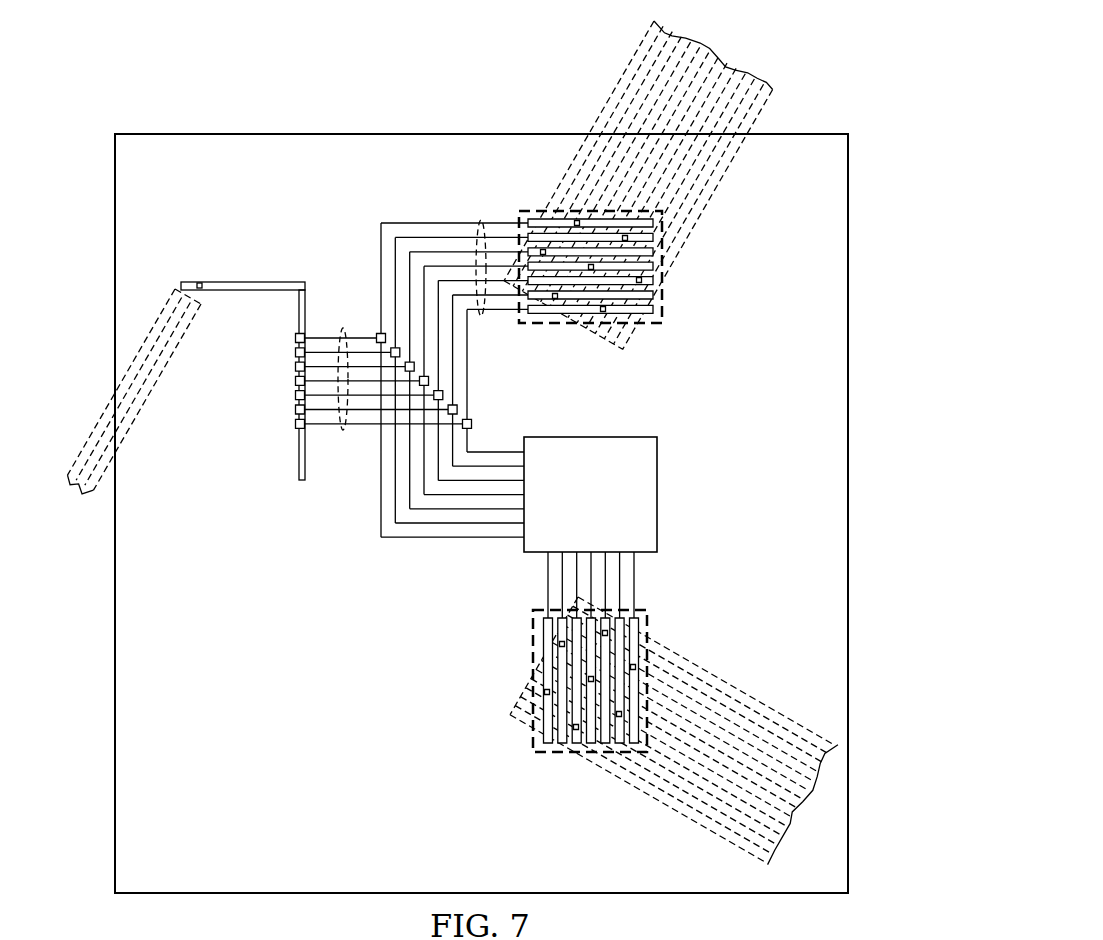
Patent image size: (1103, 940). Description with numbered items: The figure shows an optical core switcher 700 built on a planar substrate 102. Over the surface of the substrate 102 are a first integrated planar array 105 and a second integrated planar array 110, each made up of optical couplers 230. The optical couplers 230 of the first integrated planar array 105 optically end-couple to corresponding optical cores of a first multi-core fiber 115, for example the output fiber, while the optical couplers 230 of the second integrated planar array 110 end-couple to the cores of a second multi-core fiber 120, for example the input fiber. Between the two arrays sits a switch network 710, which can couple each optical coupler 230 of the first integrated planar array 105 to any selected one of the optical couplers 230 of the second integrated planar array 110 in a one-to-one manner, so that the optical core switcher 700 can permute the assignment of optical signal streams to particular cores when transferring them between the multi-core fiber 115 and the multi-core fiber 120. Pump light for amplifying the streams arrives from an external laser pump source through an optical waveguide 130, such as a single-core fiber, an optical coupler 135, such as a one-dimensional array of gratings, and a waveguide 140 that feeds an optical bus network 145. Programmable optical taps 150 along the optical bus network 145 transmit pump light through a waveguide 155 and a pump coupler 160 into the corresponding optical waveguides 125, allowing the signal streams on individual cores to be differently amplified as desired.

The optical core switcher 700 is at (343, 83).
The substrate 102 is at (288, 718).
The first integrated planar array 105 is at (543, 325).
The second integrated planar array 110 is at (532, 636).
The first multi-core fiber 115 is at (608, 100).
The second multi-core fiber 120 is at (756, 697).
The optical waveguides 125 is at (481, 220).
The optical waveguide 130 is at (145, 403).
The optical coupler 135 is at (185, 283).
The waveguide 140 is at (255, 281).
The optical bus network 145 is at (298, 457).
The programmable optical taps 150 is at (294, 338).
The waveguide 155 is at (343, 433).
The pump coupler 160 is at (377, 334).
The optical couplers 230 is at (603, 312).
The switch network 710 is at (573, 503).